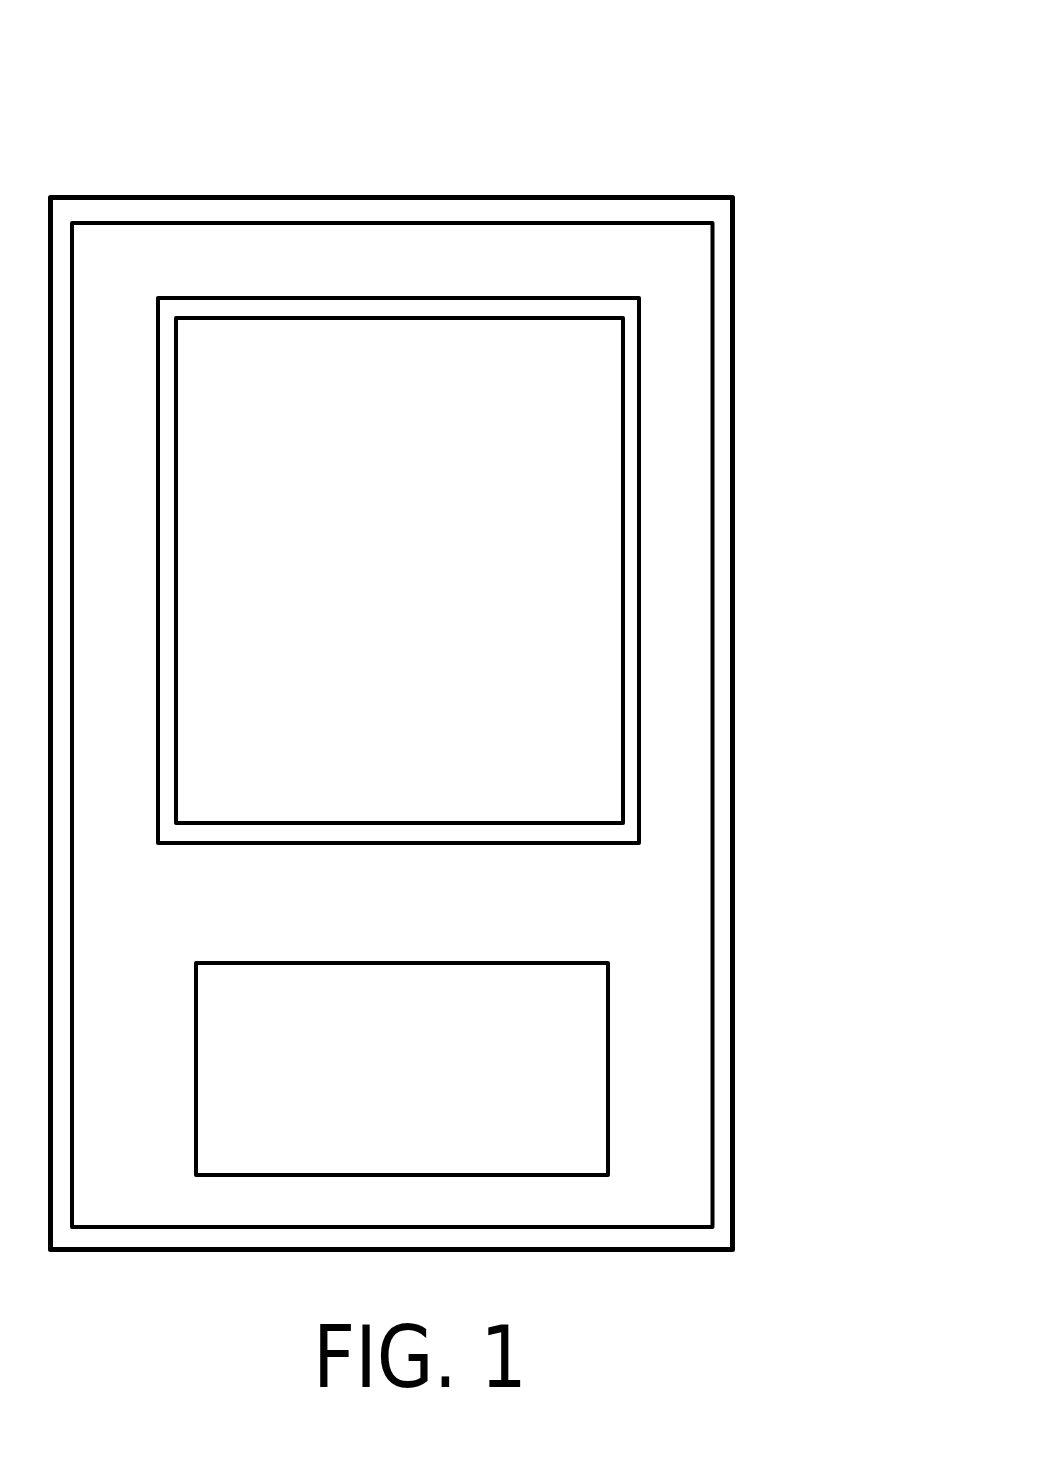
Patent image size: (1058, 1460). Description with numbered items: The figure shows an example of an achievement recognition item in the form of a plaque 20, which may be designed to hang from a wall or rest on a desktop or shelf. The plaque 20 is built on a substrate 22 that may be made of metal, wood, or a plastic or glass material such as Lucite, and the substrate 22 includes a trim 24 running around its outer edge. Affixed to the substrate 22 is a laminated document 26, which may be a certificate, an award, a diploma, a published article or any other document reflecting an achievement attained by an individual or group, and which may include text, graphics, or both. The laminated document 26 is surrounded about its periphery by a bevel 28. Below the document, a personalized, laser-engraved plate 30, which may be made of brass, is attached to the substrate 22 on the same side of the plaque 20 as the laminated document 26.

The plaque 20 is at (632, 84).
The substrate 22 is at (637, 903).
The trim 24 is at (708, 1173).
The laminated document 26 is at (585, 515).
The bevel 28 is at (620, 353).
The laser-engraved plate 30 is at (553, 1028).